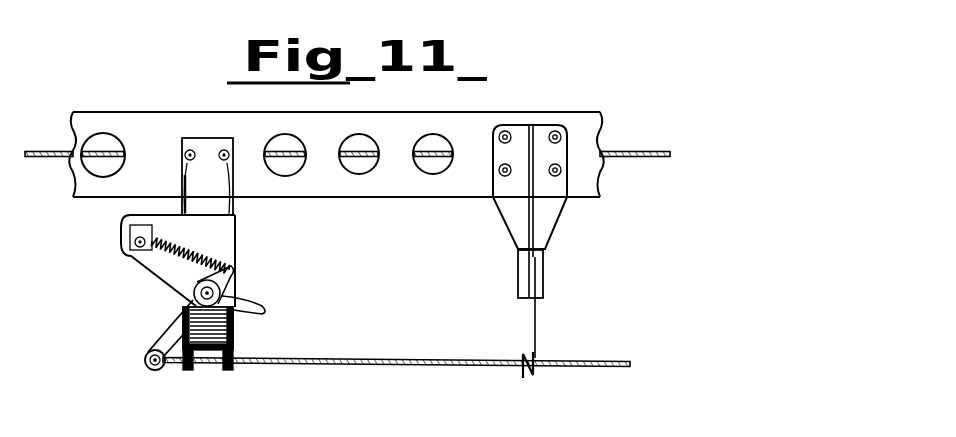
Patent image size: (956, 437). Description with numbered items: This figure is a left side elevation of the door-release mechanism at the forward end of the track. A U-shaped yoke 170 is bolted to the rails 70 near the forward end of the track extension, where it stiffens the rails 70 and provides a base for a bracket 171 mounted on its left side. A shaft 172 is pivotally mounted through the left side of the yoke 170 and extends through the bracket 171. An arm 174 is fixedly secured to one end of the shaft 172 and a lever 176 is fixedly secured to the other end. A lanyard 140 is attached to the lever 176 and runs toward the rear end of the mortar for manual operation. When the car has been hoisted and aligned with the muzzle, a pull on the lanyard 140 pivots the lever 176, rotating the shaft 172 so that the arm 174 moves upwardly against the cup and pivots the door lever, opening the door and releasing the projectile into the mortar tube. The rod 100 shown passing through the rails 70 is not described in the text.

The rails 70 is at (345, 198).
The rod 100 is at (633, 157).
The lanyard 140 is at (453, 367).
The U-shaped yoke 170 is at (235, 354).
The bracket 171 is at (237, 237).
The shaft 172 is at (199, 291).
The arm 174 is at (257, 305).
The lever 176 is at (163, 339).